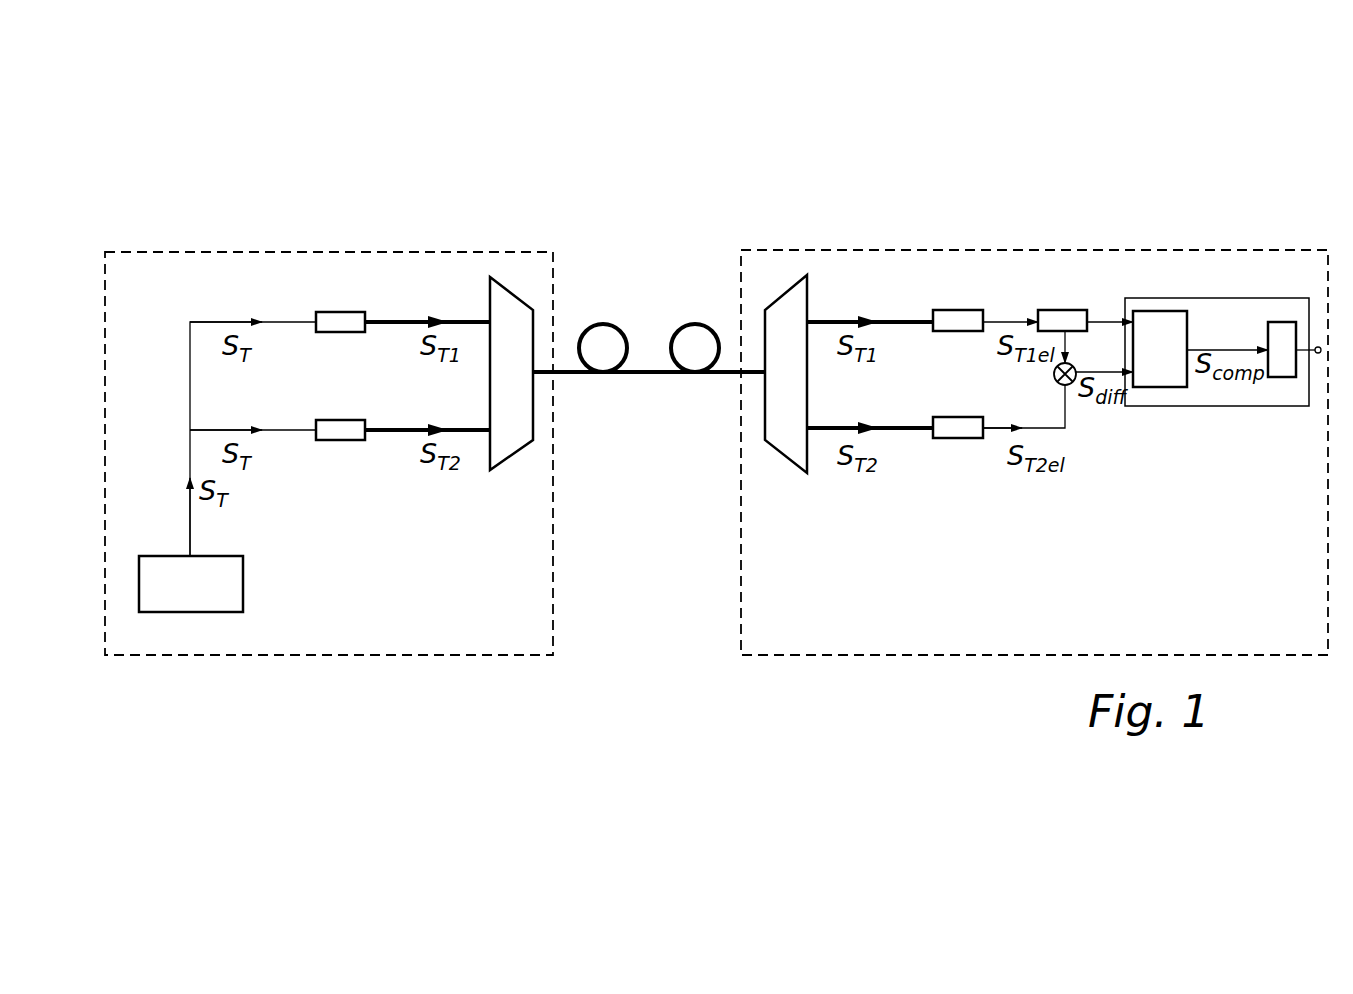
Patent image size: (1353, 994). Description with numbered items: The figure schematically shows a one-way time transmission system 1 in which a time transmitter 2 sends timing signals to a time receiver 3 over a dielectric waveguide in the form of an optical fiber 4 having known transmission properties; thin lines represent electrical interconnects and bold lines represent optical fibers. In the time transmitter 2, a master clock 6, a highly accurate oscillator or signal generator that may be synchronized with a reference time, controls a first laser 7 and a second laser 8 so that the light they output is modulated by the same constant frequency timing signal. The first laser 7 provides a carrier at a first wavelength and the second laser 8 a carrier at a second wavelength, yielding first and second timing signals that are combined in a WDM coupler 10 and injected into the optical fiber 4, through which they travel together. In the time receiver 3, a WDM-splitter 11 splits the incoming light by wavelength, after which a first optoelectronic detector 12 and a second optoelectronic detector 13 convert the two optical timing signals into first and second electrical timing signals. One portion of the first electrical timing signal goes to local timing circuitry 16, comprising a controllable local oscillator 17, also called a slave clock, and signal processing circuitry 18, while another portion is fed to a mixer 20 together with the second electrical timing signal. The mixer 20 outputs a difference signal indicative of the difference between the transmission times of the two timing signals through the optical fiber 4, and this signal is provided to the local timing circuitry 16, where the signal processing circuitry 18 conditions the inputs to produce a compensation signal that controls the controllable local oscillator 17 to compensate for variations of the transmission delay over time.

The one-way time transmission system 1 is at (750, 133).
The time transmitter 2 is at (332, 250).
The time receiver 3 is at (946, 248).
The optical fiber 4 is at (648, 372).
The master clock 6 is at (243, 582).
The first laser 7 is at (343, 332).
The second laser 8 is at (343, 440).
The WDM coupler 10 is at (512, 458).
The WDM-splitter 11 is at (780, 455).
The first optoelectronic detector 12 is at (958, 331).
The second optoelectronic detector 13 is at (953, 438).
The local timing circuitry 16 is at (1200, 298).
The controllable local oscillator 17 is at (1282, 377).
The signal processing circuitry 18 is at (1150, 387).
The mixer 20 is at (1068, 388).